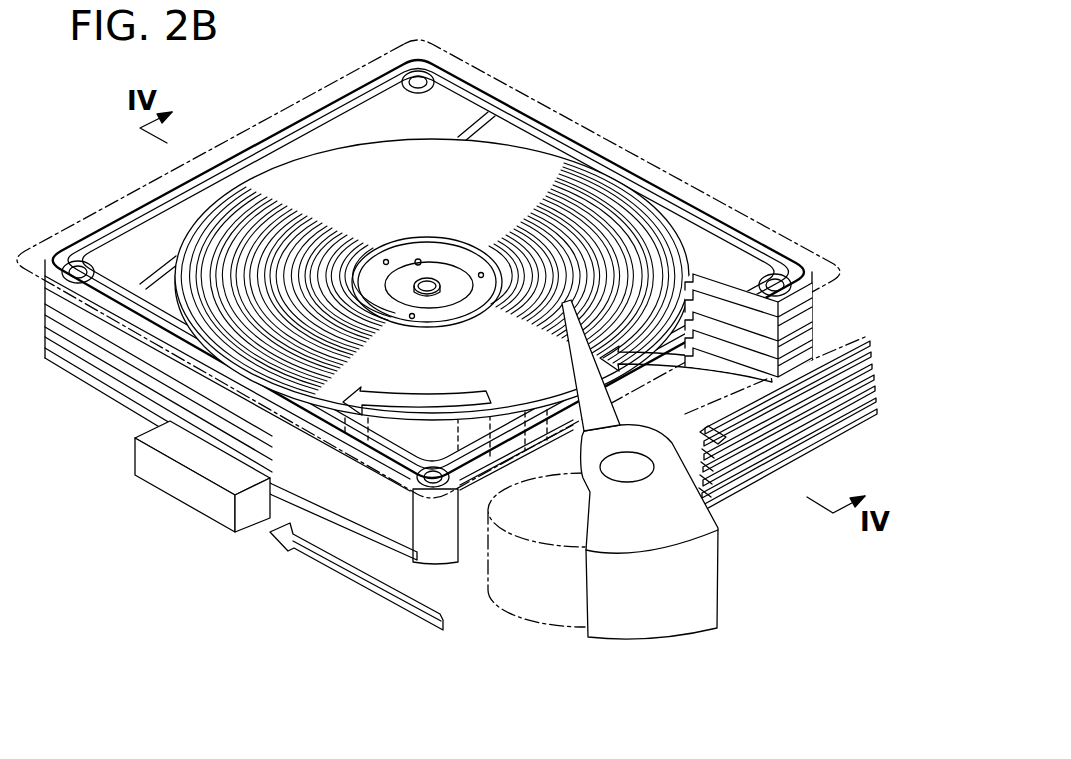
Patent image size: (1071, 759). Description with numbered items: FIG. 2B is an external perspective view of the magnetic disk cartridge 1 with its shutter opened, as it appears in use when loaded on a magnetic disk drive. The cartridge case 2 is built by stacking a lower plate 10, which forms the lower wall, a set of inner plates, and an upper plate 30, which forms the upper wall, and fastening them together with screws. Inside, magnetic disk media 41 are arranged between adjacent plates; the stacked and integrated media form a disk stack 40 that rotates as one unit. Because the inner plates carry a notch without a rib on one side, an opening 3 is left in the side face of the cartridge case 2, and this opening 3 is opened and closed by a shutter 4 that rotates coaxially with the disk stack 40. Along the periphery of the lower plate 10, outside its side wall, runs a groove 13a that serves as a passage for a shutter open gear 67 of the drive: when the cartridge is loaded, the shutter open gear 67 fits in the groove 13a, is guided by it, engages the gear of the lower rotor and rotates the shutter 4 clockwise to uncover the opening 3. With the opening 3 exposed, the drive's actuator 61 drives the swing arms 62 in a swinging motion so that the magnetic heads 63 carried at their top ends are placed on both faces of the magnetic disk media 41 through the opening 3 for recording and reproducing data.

The magnetic disk cartridge 1 is at (551, 74).
The cartridge case 2 is at (586, 127).
The opening 3 is at (745, 343).
The shutter 4 is at (457, 440).
The lower plate 10 is at (108, 399).
The groove 13a is at (363, 527).
The upper plate 30 is at (792, 248).
The disk stack 40 is at (432, 279).
The magnetic disk medium 41 is at (556, 198).
The actuator 61 is at (746, 521).
The swing arm 62 is at (703, 442).
The magnetic head 63 is at (872, 343).
The shutter open gear 67 is at (182, 486).